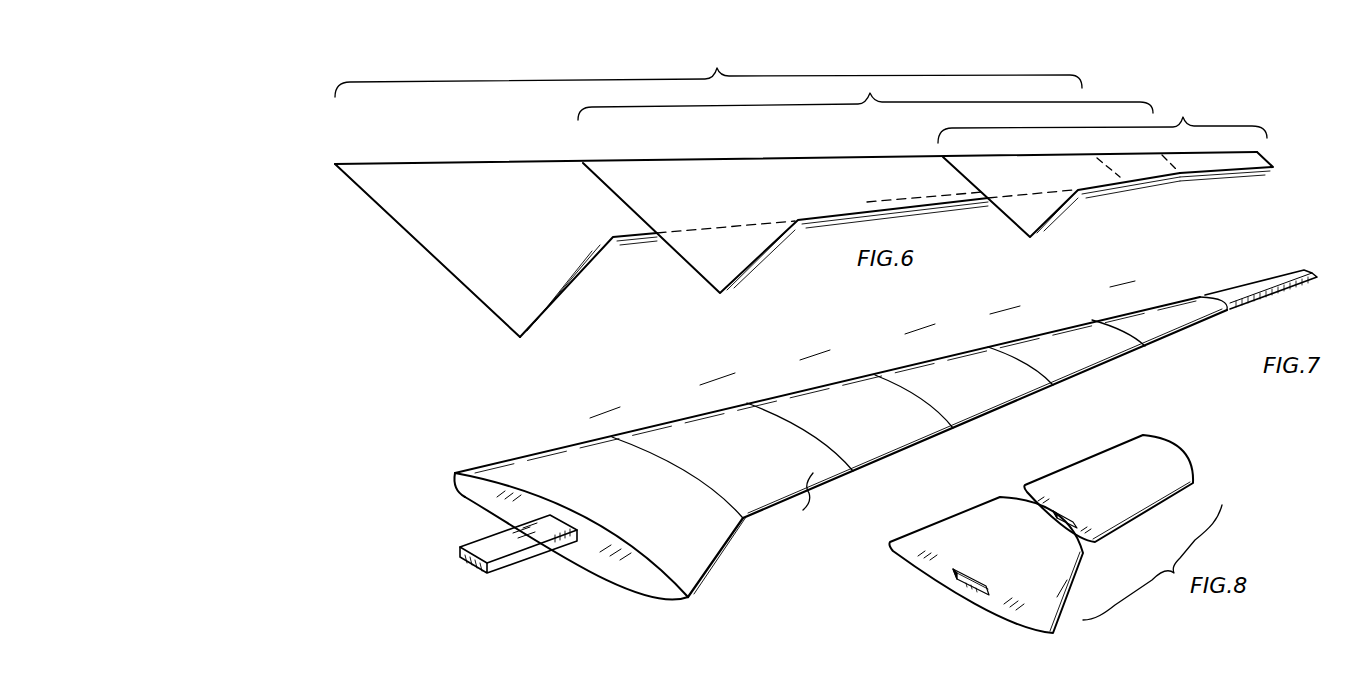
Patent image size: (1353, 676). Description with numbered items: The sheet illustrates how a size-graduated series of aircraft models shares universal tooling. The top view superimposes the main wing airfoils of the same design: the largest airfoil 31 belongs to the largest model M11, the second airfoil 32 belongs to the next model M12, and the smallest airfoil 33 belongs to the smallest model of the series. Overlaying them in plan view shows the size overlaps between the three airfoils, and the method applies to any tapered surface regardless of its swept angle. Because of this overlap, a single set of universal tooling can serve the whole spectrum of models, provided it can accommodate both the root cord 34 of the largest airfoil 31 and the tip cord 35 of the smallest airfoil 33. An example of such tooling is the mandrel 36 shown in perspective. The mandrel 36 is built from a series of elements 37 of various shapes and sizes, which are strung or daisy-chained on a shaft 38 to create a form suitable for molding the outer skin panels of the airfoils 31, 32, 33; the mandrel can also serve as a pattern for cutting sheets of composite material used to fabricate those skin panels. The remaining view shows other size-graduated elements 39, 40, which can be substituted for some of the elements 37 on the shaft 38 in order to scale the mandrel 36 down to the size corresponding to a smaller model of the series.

In FIG. 6, the largest model M11 is at (708, 69).
In FIG. 6, the second largest model M12 is at (865, 99).
In FIG. 6, the largest airfoil 31 is at (446, 174).
In FIG. 6, the second airfoil 32 is at (740, 168).
In FIG. 6, the smallest airfoil 33 is at (1033, 167).
In FIG. 6, the root cord 34 is at (443, 258).
In FIG. 6, the tip cord 35 is at (1262, 157).
In FIG. 7, the mandrel 36 is at (802, 387).
In FIG. 7, the mandrel elements 37 is at (730, 524).
In FIG. 7, the shaft 38 is at (1305, 282).
In FIG. 8, the size-graduated element 39 is at (948, 525).
In FIG. 8, the size-graduated element 40 is at (1090, 467).